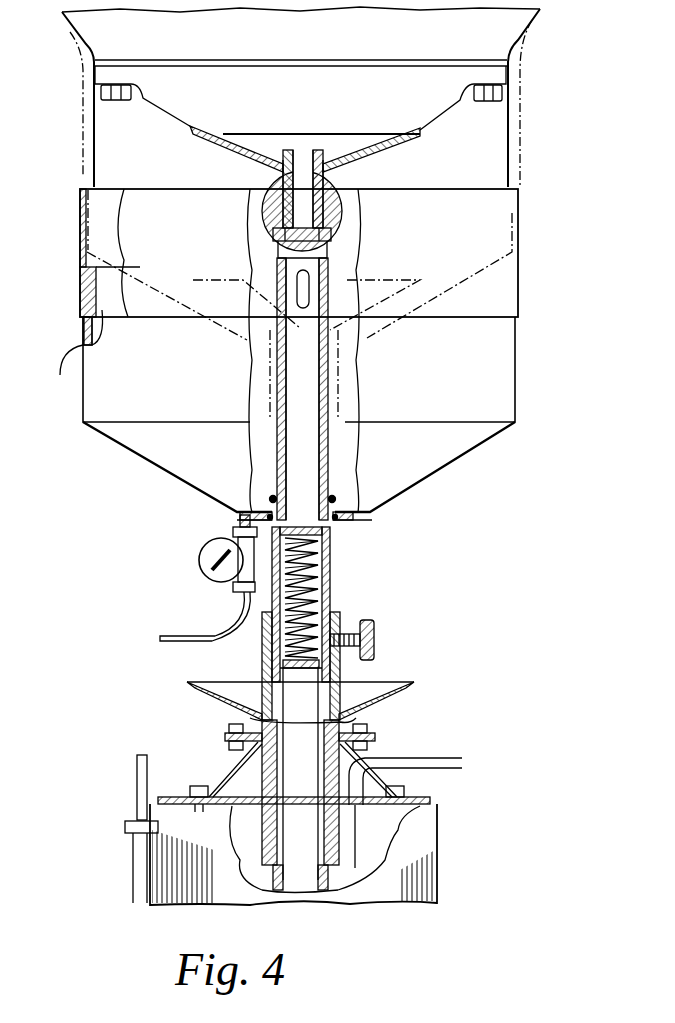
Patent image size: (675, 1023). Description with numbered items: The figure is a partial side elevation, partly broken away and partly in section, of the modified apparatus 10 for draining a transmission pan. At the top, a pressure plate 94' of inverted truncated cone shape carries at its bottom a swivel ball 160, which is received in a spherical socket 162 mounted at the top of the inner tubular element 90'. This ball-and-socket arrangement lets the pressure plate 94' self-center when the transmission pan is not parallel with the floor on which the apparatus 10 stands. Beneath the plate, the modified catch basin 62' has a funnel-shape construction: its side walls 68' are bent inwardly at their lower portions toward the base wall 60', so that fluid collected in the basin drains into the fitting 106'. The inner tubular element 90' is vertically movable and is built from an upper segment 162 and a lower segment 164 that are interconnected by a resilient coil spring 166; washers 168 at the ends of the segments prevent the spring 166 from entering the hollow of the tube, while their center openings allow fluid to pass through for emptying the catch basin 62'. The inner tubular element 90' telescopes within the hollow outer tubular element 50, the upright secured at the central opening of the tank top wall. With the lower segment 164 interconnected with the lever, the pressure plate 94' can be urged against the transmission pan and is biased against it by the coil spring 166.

The modified apparatus 10 is at (525, 330).
The outer tubular element 50 is at (262, 641).
The base wall 60' is at (312, 532).
The modified catch basin 62' is at (328, 350).
The side walls 68' is at (68, 351).
The inner tubular element 90' is at (345, 374).
The pressure plate 94' is at (324, 149).
The fitting 106' is at (208, 576).
The swivel ball 160 is at (338, 182).
The spherical socket / upper segment 162 is at (340, 243).
The lower segment 164 is at (296, 840).
The coil spring 166 is at (318, 600).
The washers 168 is at (300, 535).